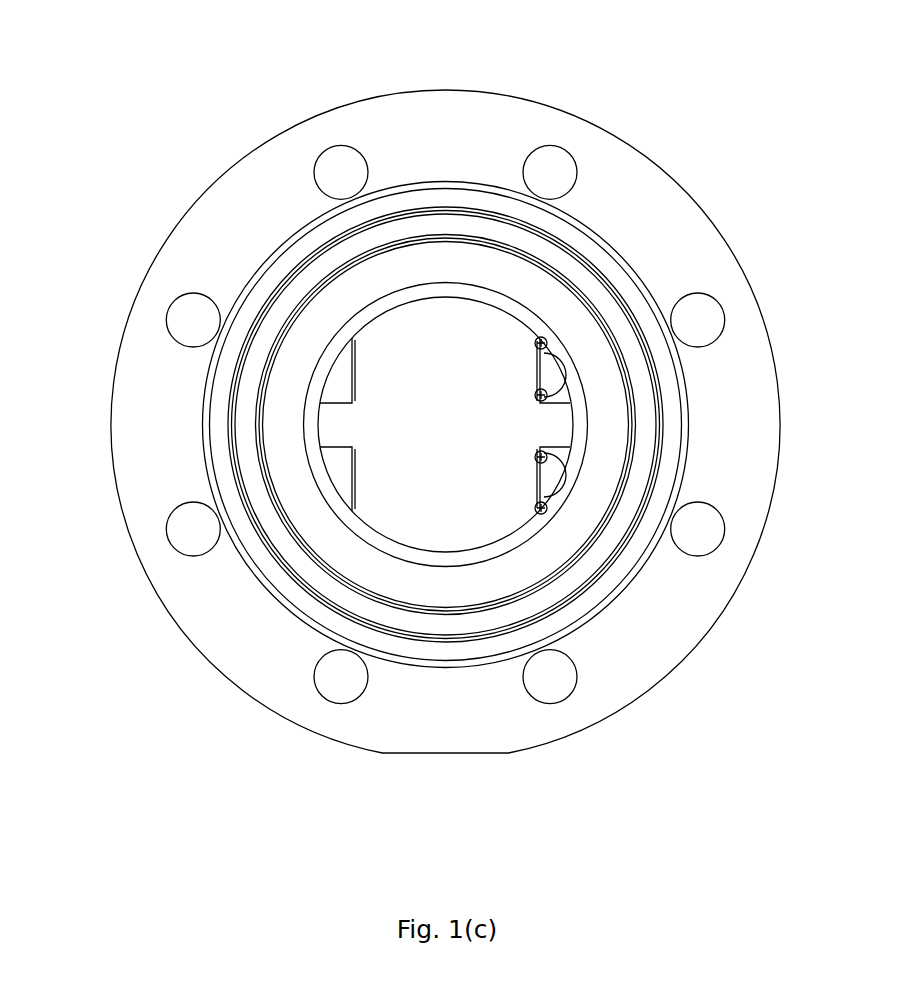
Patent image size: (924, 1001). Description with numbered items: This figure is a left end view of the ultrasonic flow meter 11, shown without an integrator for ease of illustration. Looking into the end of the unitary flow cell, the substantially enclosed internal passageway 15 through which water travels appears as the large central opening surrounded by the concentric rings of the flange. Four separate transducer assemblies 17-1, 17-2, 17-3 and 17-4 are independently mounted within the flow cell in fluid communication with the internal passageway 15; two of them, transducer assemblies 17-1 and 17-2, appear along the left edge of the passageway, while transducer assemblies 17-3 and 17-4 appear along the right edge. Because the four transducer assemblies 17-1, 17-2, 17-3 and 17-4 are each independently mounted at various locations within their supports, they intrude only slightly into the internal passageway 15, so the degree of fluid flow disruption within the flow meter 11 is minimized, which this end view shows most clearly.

The ultrasonic flow meter 11 is at (805, 822).
The internal passageway 15 is at (447, 335).
The transducer assembly 17-1 is at (342, 370).
The transducer assembly 17-2 is at (340, 483).
The transducer assembly 17-3 is at (553, 360).
The transducer assembly 17-4 is at (556, 472).